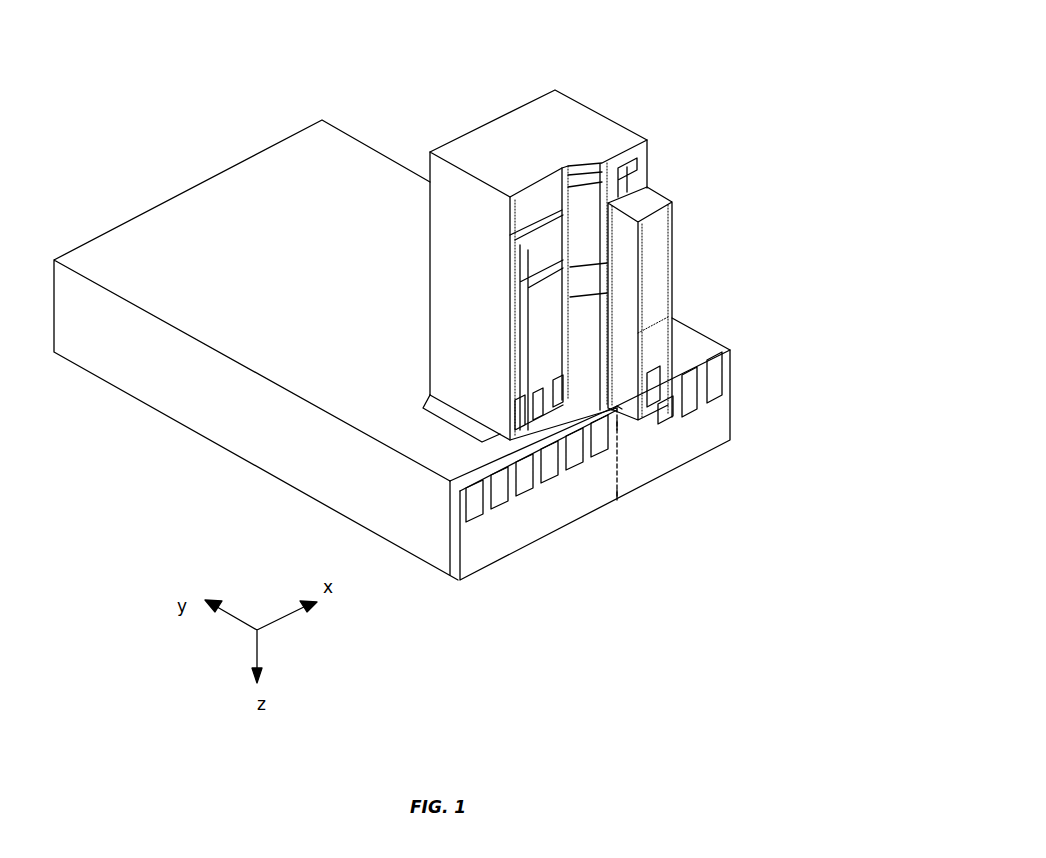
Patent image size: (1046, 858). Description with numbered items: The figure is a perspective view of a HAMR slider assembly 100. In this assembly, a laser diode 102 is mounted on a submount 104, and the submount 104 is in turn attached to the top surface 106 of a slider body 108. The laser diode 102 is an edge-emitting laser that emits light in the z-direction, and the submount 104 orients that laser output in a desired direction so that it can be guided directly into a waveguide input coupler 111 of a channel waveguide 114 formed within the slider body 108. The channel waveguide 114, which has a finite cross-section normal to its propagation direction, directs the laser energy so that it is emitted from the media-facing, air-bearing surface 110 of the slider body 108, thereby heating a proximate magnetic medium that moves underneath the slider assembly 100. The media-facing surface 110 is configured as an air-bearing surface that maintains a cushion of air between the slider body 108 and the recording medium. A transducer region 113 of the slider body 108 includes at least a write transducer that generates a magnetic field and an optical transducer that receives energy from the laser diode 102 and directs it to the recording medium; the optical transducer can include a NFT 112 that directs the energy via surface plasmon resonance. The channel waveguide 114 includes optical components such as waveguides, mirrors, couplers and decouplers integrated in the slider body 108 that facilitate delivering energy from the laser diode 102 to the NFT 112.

The HAMR slider assembly 100 is at (780, 62).
The laser diode 102 is at (648, 198).
The submount 104 is at (607, 133).
The top surface 106 is at (228, 222).
The slider body 108 is at (700, 330).
The media-facing, air-bearing surface 110 is at (445, 578).
The waveguide input coupler 111 is at (617, 408).
The NFT 112 is at (617, 502).
The transducer region 113 is at (617, 497).
The channel waveguide 114 is at (618, 445).